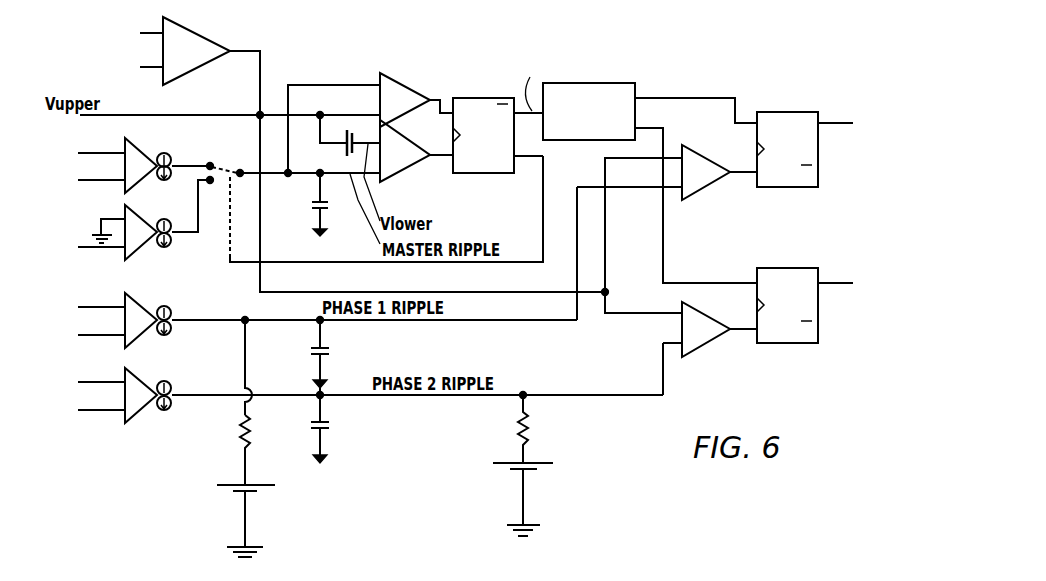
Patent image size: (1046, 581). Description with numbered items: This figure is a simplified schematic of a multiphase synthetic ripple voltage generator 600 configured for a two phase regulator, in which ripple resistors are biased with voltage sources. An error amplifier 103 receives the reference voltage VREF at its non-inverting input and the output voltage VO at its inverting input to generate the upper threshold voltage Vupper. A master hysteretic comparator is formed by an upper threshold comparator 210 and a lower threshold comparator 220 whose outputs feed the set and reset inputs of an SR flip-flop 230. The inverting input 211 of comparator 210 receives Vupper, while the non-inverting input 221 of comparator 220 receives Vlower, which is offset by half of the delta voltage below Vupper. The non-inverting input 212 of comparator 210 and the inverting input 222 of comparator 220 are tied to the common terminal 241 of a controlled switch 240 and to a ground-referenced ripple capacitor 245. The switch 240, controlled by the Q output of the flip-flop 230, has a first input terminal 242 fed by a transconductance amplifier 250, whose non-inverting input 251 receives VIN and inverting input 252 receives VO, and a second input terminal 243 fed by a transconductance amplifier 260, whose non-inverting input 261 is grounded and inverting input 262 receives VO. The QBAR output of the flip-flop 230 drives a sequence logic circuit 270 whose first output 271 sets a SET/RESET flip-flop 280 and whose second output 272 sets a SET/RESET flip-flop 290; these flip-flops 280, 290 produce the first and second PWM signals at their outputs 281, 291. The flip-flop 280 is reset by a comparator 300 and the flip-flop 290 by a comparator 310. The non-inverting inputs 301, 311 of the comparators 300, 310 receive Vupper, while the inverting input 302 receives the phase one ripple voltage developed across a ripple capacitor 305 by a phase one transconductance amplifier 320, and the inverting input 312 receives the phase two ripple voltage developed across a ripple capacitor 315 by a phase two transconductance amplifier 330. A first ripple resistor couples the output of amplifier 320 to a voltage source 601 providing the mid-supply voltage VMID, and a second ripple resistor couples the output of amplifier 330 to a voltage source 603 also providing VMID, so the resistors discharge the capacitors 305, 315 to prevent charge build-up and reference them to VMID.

The multiphase synthetic ripple voltage generator 600 is at (812, 58).
The error amplifier 103 is at (197, 34).
The upper threshold comparator 210 is at (404, 82).
The inverting input of comparator 210 211 is at (377, 113).
The non-inverting input of comparator 210 212 is at (371, 84).
The lower threshold comparator 220 is at (412, 170).
The non-inverting input of comparator 220 221 is at (396, 134).
The inverting input of comparator 220 222 is at (386, 180).
The SR flip-flop 230 is at (472, 97).
The controlled switch 240 is at (221, 181).
The common terminal 241 is at (240, 173).
The first input terminal 242 is at (207, 164).
The second input terminal 243 is at (207, 179).
The ripple capacitor 245 is at (307, 204).
The transconductance amplifier 250 is at (147, 154).
The non-inverting input of amplifier 250 251 is at (125, 148).
The inverting input of amplifier 250 252 is at (125, 182).
The transconductance amplifier 260 is at (143, 252).
The non-inverting input of amplifier 260 261 is at (100, 219).
The inverting input of amplifier 260 262 is at (124, 250).
The sequence logic circuit 270 is at (627, 82).
The first output 271 is at (638, 97).
The second output 272 is at (639, 127).
The SET/RESET flip-flop 280 is at (768, 111).
The PWM1 output 281 is at (822, 126).
The SET/RESET flip-flop 290 is at (771, 267).
The PWM2 output 291 is at (822, 286).
The comparator 300 is at (707, 159).
The non-inverting input of comparator 300 301 is at (680, 150).
The inverting input of comparator 300 302 is at (680, 189).
The ripple capacitor 305 is at (332, 351).
The comparator 310 is at (722, 321).
The non-inverting input of comparator 310 311 is at (680, 311).
The inverting input of comparator 310 312 is at (680, 345).
The ripple capacitor 315 is at (332, 430).
The PHASE 1 transconductance amplifier 320 is at (146, 333).
The PHASE 2 transconductance amplifier 330 is at (146, 408).
The voltage source 601 is at (228, 487).
The voltage source 603 is at (505, 466).